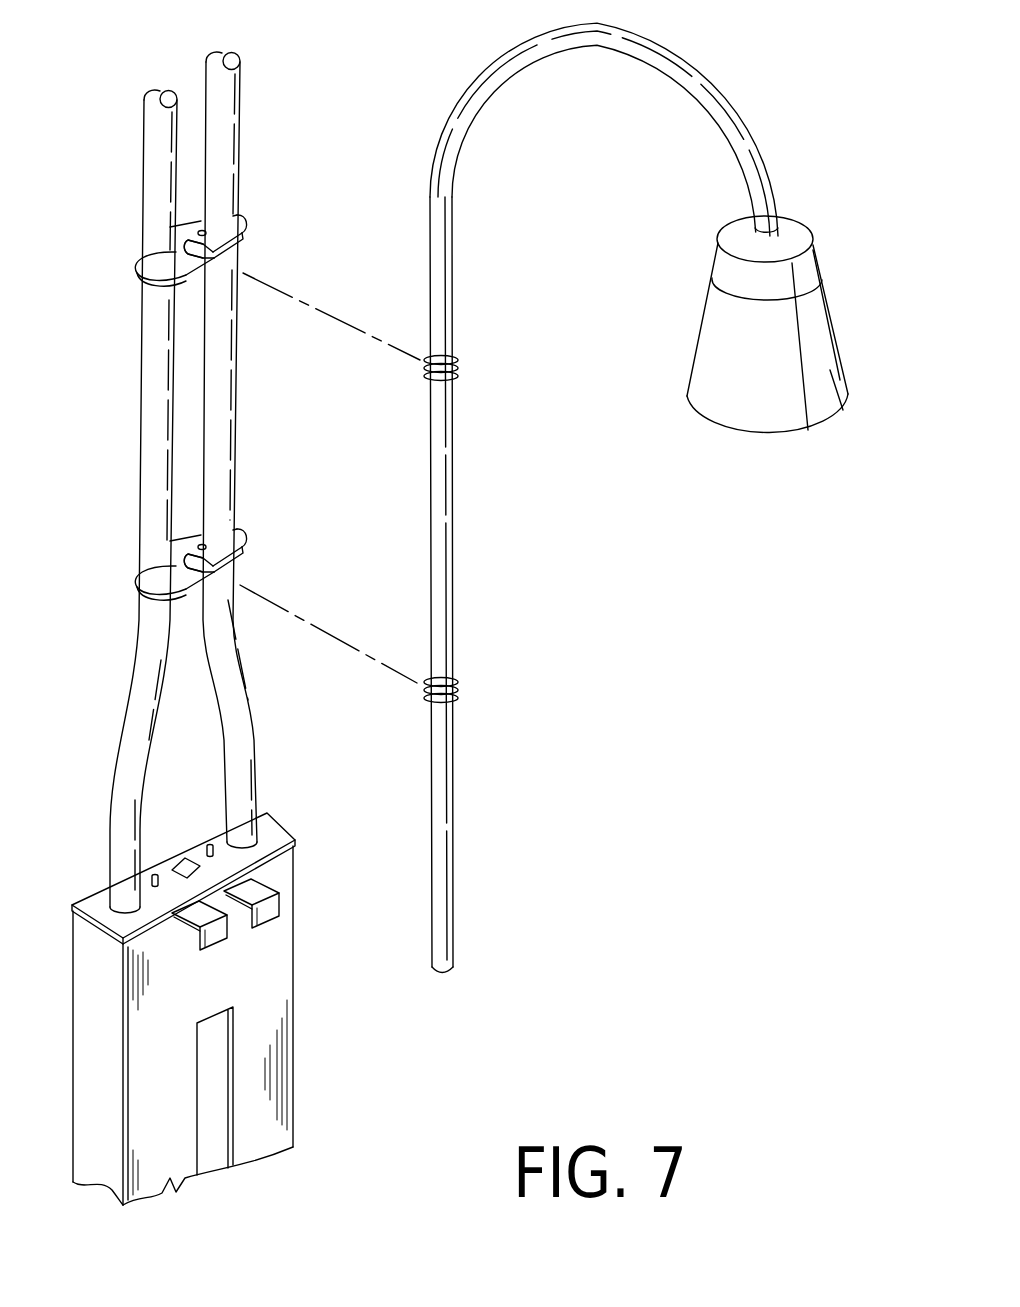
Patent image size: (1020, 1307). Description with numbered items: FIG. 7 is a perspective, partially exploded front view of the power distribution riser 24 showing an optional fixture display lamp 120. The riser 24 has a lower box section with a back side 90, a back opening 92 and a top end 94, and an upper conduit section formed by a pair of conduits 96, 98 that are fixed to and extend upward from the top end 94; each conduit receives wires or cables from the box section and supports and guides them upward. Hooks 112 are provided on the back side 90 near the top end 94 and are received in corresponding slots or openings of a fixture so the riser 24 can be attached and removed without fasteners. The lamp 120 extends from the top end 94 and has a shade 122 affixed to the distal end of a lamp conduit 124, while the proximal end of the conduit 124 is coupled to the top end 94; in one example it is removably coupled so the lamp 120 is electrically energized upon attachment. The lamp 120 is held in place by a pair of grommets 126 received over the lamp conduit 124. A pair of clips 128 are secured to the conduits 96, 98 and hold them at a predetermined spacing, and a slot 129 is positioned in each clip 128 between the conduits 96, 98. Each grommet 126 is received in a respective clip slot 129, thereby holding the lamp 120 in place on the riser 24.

The power distribution riser 24 is at (292, 986).
The back side 90 is at (148, 1002).
The back opening 92 is at (231, 1072).
The top end 94 is at (270, 837).
The conduit 96 is at (217, 437).
The conduit 98 is at (148, 427).
The hooks 112 is at (215, 948).
The lamp 120 is at (654, 494).
The shade 122 is at (822, 297).
The lamp conduit 124 is at (735, 127).
The grommets 126 is at (458, 365).
The clips 128 is at (247, 232).
The slot 129 is at (200, 250).